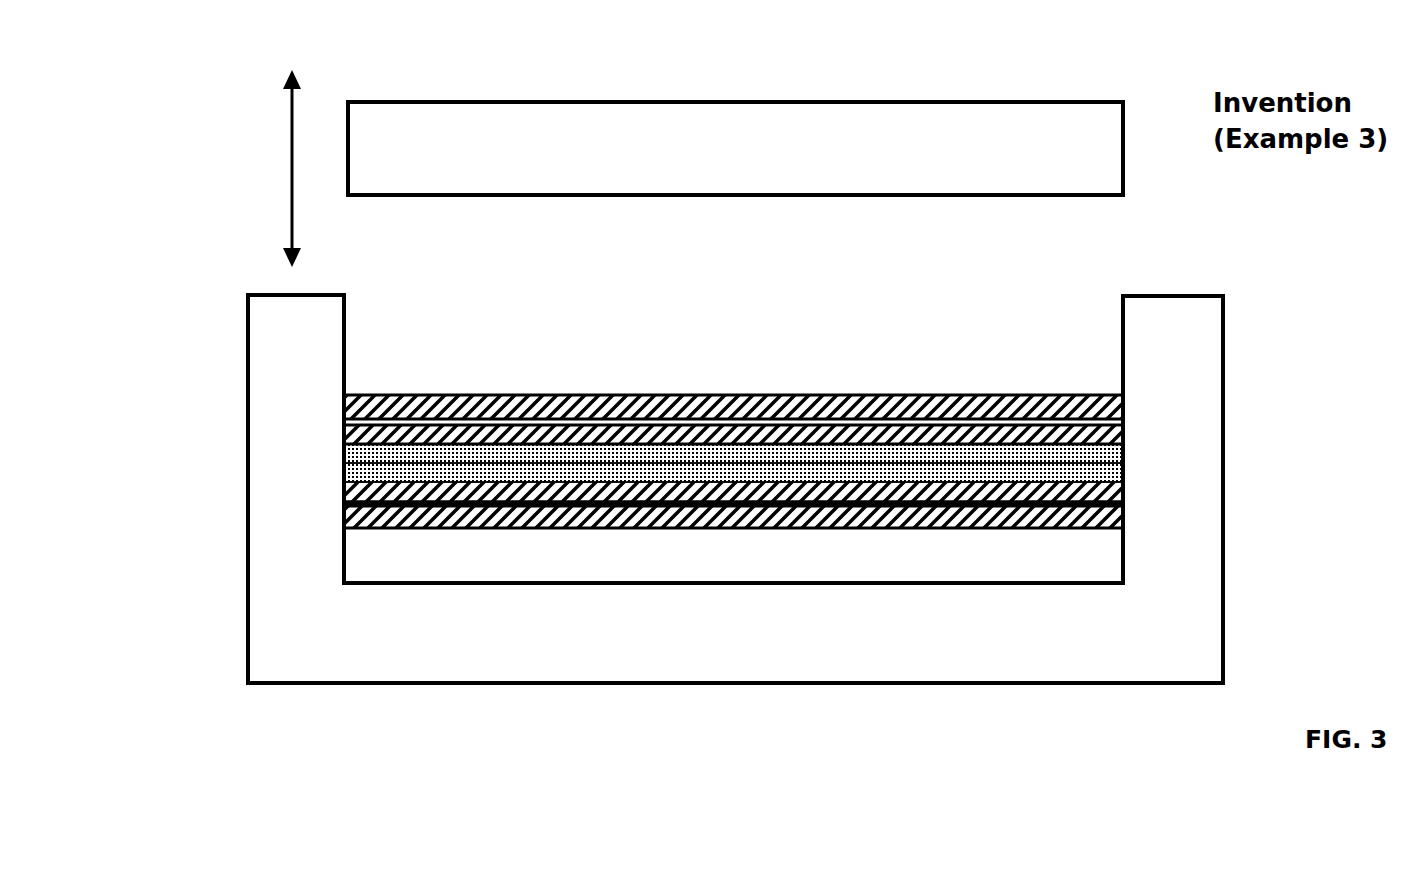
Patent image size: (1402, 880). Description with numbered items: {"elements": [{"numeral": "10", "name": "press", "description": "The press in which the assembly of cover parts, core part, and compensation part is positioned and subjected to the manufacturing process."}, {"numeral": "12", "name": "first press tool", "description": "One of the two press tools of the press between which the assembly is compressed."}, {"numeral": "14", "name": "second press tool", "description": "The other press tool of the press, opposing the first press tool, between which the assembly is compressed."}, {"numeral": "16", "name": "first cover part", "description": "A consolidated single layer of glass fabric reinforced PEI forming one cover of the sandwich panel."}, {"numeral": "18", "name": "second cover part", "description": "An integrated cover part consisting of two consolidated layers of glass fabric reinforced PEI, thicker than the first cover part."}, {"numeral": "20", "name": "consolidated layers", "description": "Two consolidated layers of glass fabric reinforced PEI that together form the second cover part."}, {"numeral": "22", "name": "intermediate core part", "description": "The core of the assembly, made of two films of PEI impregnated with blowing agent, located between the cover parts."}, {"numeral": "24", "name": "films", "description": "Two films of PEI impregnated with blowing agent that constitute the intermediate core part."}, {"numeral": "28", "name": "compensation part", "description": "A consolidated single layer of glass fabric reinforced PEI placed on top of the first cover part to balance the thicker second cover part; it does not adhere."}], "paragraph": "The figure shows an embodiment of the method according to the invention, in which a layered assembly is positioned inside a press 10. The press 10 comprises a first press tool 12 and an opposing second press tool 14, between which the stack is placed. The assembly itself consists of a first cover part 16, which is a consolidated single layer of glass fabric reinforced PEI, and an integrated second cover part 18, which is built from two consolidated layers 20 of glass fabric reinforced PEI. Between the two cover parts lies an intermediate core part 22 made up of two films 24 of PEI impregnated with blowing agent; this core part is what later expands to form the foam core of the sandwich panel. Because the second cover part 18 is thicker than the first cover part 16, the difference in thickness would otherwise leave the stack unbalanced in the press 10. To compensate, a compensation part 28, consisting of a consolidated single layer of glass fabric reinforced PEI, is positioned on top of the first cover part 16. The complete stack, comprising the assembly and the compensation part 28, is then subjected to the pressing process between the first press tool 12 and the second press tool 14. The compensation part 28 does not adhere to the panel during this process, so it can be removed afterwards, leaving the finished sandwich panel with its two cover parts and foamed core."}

The molding apparatus 10 is at (190, 267).
The upper mold 12 is at (540, 120).
The lower mold 14 is at (263, 462).
The intermediate layer 16 is at (633, 428).
The lower laminate 18 is at (1136, 487).
The lower laminate layers 20 is at (437, 493).
The core laminate 22 is at (1162, 442).
The core layers 24 is at (473, 475).
The surface layer 28 is at (818, 401).